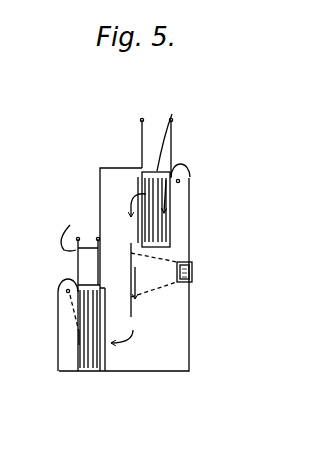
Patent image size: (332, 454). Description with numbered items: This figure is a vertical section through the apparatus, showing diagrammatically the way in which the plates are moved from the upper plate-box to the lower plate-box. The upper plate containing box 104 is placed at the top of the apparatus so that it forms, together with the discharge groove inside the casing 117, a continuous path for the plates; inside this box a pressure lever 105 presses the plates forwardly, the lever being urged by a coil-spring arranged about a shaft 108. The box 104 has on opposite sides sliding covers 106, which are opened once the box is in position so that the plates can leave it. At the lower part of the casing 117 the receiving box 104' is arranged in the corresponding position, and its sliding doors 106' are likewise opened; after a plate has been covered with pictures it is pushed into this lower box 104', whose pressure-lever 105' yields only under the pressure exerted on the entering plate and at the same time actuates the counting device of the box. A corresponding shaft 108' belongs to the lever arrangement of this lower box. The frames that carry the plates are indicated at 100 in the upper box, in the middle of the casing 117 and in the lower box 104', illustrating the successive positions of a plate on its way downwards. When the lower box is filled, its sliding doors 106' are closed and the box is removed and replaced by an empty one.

The filter element 100 is at (165, 237).
The plate containing box 104 is at (183, 135).
The pressure lever 105 is at (200, 189).
The sliding covers 106 is at (160, 148).
The shaft 108 is at (203, 176).
The casing 117 is at (180, 326).
The receiving box 104' is at (50, 348).
The pressure-lever 105' is at (49, 325).
The sliding doors 106' is at (71, 229).
The contact 108' is at (50, 308).